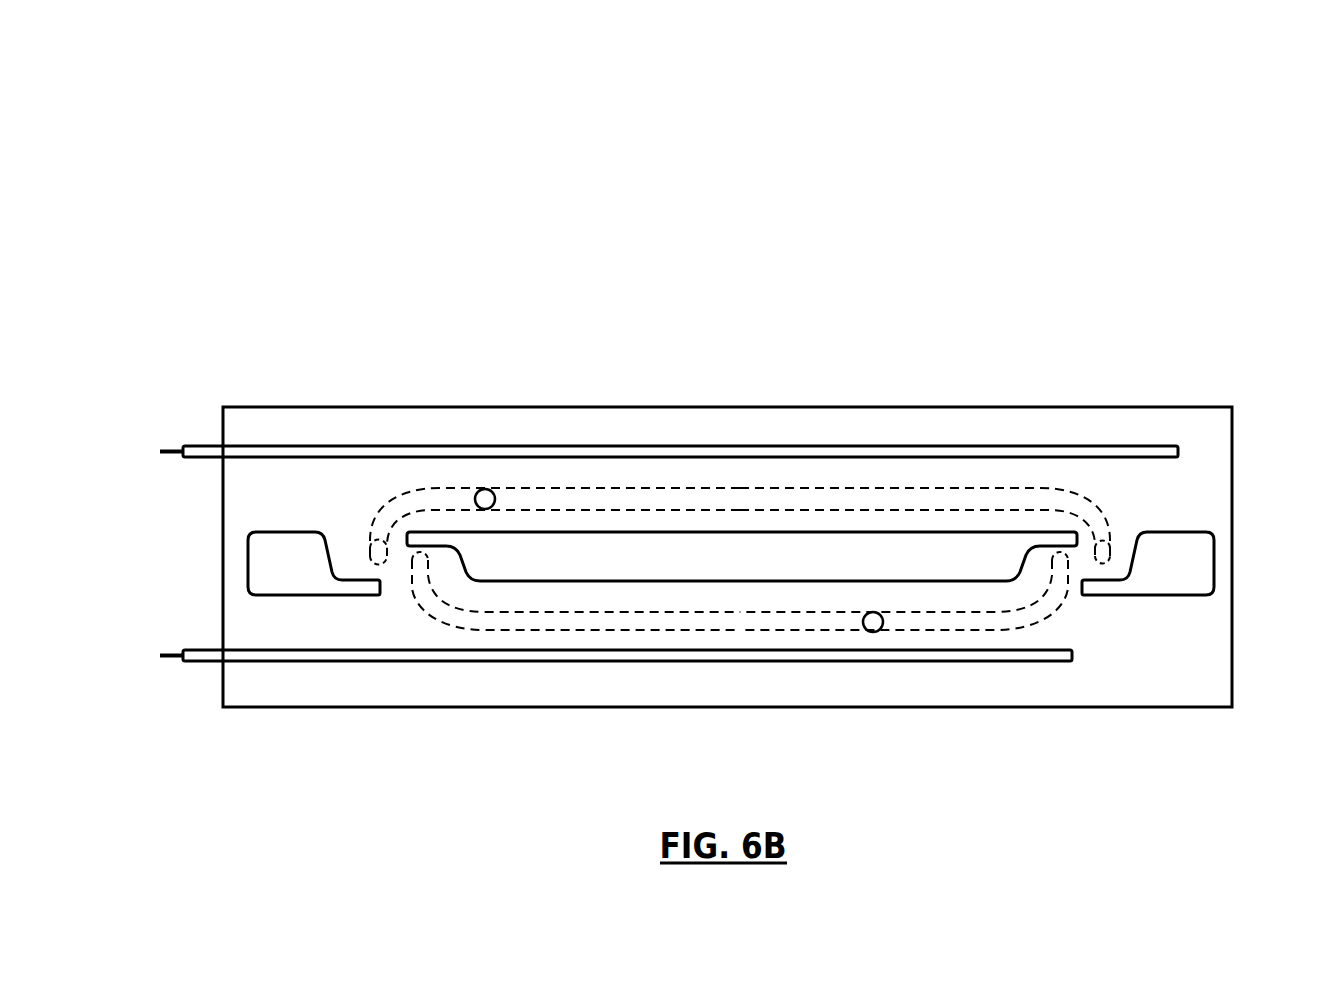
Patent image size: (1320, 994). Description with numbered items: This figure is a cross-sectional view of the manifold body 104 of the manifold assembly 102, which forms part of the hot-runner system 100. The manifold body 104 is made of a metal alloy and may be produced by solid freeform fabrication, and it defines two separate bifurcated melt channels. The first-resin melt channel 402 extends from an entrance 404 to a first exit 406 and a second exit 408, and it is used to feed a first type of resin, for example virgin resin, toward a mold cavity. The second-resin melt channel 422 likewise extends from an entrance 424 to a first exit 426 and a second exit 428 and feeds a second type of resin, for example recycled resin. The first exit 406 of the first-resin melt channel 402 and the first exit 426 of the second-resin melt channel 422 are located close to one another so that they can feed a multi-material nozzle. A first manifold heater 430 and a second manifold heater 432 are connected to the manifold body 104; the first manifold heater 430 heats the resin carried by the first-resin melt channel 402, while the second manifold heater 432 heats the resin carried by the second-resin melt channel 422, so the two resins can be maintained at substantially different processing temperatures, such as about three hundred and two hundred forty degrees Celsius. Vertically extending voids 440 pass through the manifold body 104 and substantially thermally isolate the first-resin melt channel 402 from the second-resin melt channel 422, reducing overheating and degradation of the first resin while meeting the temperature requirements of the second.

The hot-runner system 100 is at (1241, 176).
The manifold assembly 102 is at (1196, 290).
The manifold body 104 is at (1125, 407).
The first-resin melt channel 402 is at (385, 512).
The entrance 404 is at (487, 490).
The first exit 406 is at (380, 568).
The second exit 408 is at (1056, 575).
The second-resin melt channel 422 is at (1023, 600).
The entrance 424 is at (875, 611).
The first exit 426 is at (420, 562).
The second exit 428 is at (1100, 575).
The first manifold heater 430 is at (188, 457).
The second manifold heater 432 is at (207, 661).
The void 440 is at (288, 567).